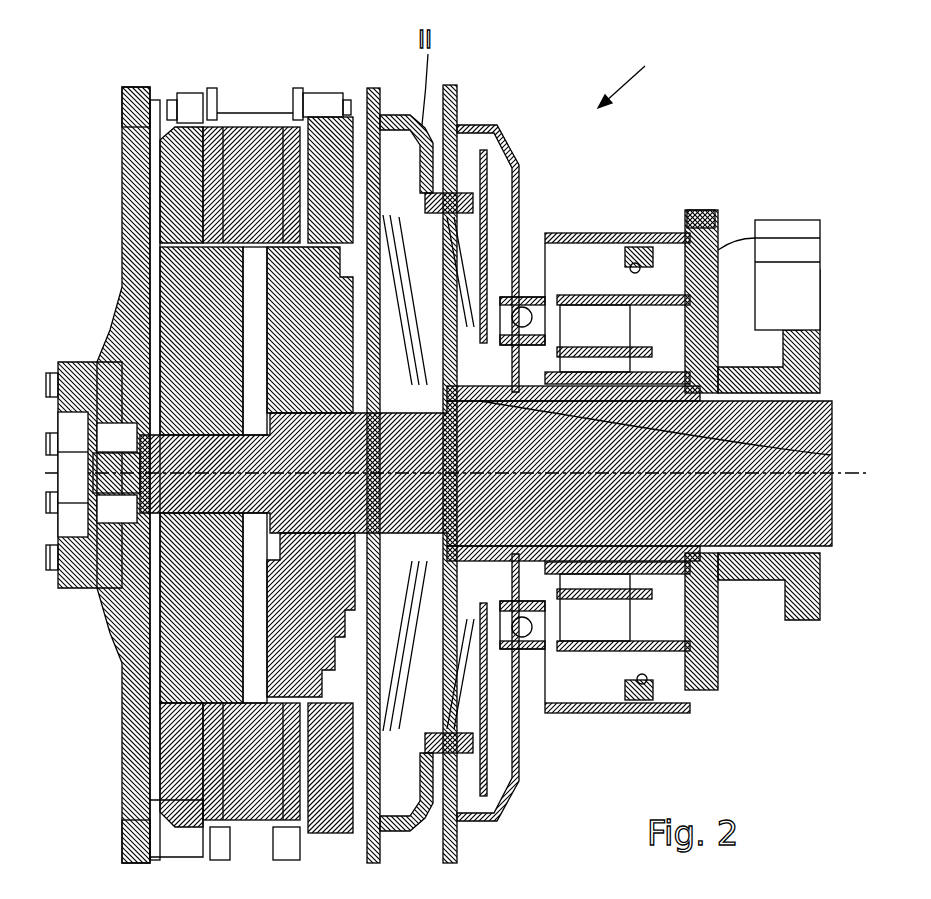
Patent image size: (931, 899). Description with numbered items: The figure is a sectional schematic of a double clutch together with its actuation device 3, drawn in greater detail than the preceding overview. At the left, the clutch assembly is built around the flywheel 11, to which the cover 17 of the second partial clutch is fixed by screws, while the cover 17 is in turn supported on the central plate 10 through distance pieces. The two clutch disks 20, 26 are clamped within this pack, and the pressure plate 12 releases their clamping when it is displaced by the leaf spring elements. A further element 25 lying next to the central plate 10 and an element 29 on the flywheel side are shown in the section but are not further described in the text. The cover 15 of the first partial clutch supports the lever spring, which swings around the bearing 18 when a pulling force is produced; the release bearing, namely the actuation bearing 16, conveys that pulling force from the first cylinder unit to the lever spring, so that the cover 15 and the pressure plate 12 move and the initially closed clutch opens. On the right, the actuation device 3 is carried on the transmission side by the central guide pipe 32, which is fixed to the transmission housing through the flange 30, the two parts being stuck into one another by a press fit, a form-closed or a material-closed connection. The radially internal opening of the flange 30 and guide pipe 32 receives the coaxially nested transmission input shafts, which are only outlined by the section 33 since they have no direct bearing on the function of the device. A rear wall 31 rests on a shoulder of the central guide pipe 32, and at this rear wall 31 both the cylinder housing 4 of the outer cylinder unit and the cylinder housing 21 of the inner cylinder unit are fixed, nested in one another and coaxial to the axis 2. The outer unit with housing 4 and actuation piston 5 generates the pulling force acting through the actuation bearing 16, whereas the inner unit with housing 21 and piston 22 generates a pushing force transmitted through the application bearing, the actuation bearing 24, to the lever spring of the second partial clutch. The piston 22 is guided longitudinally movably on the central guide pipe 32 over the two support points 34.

The axis 2 is at (50, 470).
The actuation device 3 is at (629, 74).
The cylinder housing 4 is at (660, 715).
The actuation piston 5 is at (604, 655).
The central plate 10 is at (255, 145).
The flywheel 11 is at (130, 254).
The pressure plate 12 is at (175, 176).
The cover 15 is at (498, 165).
The actuation bearing 16 is at (530, 652).
The cover 17 is at (374, 98).
The bearing 18 is at (490, 790).
The clutch disk 20 is at (195, 312).
The cylinder housing 21 is at (660, 248).
The piston 22 is at (527, 292).
The actuation bearing 24 is at (512, 768).
The intermediate plate 25 is at (325, 145).
The clutch disk 26 is at (293, 643).
The flange bolts 29 is at (52, 404).
The flange 30 is at (818, 285).
The rear wall 31 is at (704, 690).
The central guide pipe 32 is at (726, 580).
The section 33 is at (832, 510).
The support points 34 is at (832, 455).